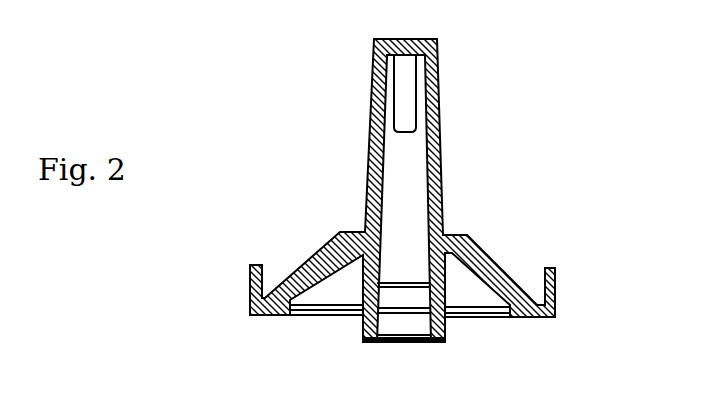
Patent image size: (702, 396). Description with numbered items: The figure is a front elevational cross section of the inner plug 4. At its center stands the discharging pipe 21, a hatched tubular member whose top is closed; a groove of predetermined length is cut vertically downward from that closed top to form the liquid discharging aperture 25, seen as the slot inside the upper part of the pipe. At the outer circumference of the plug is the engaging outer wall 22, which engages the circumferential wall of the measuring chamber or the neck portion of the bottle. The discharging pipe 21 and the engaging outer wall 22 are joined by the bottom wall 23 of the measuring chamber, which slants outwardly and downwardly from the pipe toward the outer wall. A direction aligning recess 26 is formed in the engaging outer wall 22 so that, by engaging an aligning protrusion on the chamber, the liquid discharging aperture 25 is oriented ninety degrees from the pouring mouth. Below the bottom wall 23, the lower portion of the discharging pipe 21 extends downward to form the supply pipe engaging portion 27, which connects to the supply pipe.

The inner plug 4 is at (400, 197).
The discharging pipe 21 is at (442, 181).
The engaging outer wall 22 is at (250, 265).
The bottom wall 23 is at (323, 279).
The liquid discharging aperture 25 is at (405, 83).
The direction aligning recess 26 is at (557, 283).
The supply pipe engaging portion 27 is at (445, 328).